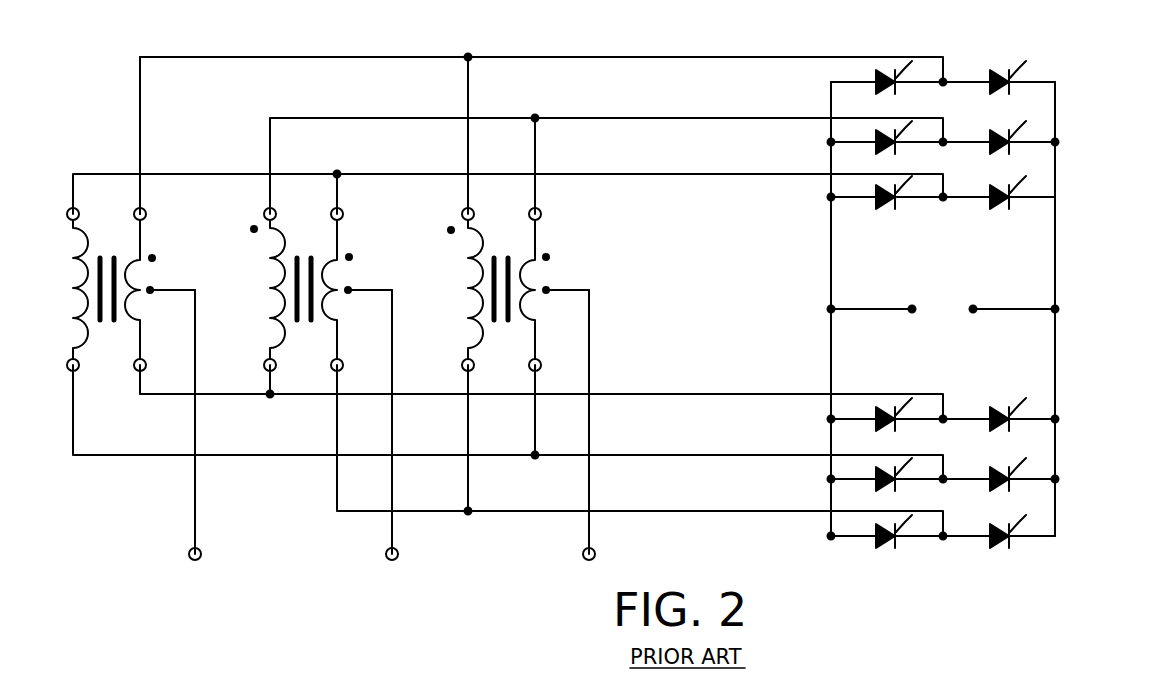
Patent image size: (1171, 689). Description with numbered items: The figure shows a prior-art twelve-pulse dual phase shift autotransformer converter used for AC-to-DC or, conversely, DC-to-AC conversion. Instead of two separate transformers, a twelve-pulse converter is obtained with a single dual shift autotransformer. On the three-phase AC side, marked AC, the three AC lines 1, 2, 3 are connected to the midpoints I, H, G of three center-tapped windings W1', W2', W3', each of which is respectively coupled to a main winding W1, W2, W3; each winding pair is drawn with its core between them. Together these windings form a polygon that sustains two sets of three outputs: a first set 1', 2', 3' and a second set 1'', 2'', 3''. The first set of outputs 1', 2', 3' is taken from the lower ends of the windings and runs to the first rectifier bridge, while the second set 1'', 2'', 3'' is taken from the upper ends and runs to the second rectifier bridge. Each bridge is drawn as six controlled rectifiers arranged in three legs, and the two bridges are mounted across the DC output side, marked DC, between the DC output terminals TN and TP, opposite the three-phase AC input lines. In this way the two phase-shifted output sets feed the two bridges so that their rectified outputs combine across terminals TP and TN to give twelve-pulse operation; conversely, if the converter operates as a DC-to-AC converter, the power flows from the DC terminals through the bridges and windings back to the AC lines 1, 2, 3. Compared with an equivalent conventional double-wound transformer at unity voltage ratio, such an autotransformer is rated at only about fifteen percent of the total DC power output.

The main winding W1 is at (73, 289).
The winding W1' is at (158, 289).
The main winding W2 is at (270, 289).
The winding W2' is at (355, 289).
The main winding W3 is at (468, 289).
The winding W3' is at (552, 289).
The midpoint I is at (150, 290).
The midpoint H is at (348, 290).
The midpoint G is at (546, 290).
The AC line 1 is at (404, 430).
The AC line 2 is at (601, 430).
The AC line 3 is at (207, 430).
The output 1' is at (640, 450).
The output 2' is at (508, 422).
The output 3' is at (541, 388).
The output 1'' is at (508, 176).
The output 2'' is at (606, 148).
The output 3'' is at (541, 117).
The DC output DC is at (960, 288).
The DC output terminal TP is at (876, 330).
The DC output terminal TN is at (1009, 330).
The three-phase AC input AC is at (496, 589).